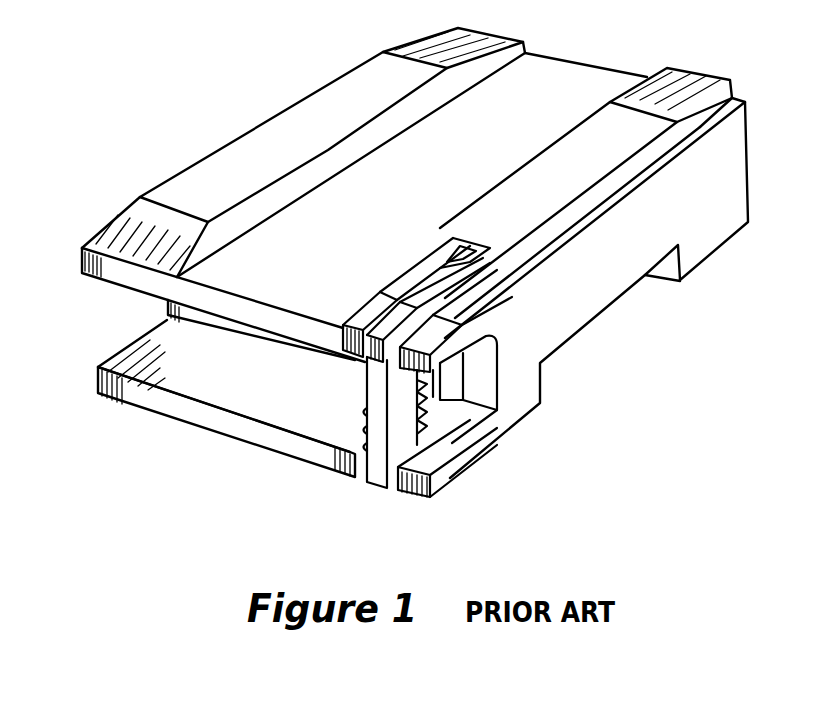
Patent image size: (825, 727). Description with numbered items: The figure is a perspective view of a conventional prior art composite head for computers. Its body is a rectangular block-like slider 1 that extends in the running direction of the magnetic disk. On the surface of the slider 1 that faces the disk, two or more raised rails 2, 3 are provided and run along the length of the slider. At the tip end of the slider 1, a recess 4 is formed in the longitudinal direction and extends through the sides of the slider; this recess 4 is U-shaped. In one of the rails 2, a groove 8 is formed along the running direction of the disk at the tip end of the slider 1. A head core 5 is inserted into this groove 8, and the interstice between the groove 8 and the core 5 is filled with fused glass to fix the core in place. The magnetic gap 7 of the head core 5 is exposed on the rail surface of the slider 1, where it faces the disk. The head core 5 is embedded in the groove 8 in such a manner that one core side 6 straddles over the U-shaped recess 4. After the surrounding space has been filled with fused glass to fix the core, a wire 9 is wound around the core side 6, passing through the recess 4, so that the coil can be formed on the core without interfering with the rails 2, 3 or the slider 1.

The slider 1 is at (730, 180).
The raised rail 2 is at (640, 128).
The raised rail 3 is at (303, 115).
The recess 4 is at (482, 378).
The head core 5 is at (368, 364).
The core side 6 is at (393, 413).
The magnetic gap 7 is at (445, 268).
The groove 8 is at (400, 282).
The wire 9 is at (366, 484).